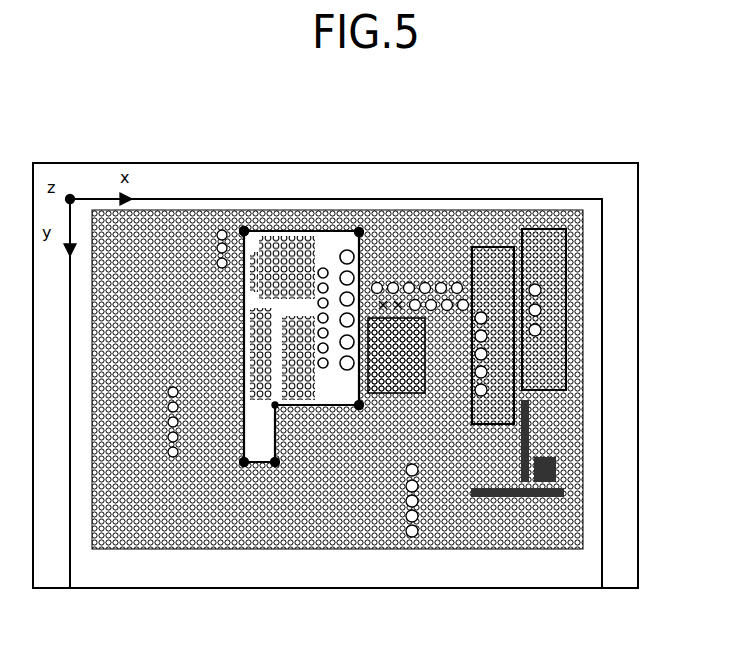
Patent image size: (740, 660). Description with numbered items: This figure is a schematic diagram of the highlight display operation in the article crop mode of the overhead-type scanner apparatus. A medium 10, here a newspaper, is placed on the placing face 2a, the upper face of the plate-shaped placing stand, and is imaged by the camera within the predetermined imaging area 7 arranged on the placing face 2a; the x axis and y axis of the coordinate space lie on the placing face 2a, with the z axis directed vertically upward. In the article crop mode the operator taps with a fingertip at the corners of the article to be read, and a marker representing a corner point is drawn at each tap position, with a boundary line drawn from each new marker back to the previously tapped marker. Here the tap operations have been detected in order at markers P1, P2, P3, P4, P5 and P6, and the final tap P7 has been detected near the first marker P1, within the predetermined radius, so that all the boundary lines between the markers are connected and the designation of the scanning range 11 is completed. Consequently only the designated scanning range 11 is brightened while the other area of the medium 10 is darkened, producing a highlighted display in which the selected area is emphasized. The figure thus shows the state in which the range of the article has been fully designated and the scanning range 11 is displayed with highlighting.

The imaging area 7 is at (602, 483).
The placing face 2a is at (490, 182).
The medium 10 is at (563, 420).
The scanning range 11 is at (325, 262).
The marker P1 is at (244, 231).
The marker P2 is at (359, 232).
The marker P3 is at (360, 405).
The marker P4 is at (276, 405).
The marker P5 is at (275, 462).
The marker P6 is at (244, 462).
The marker P7 is at (244, 231).